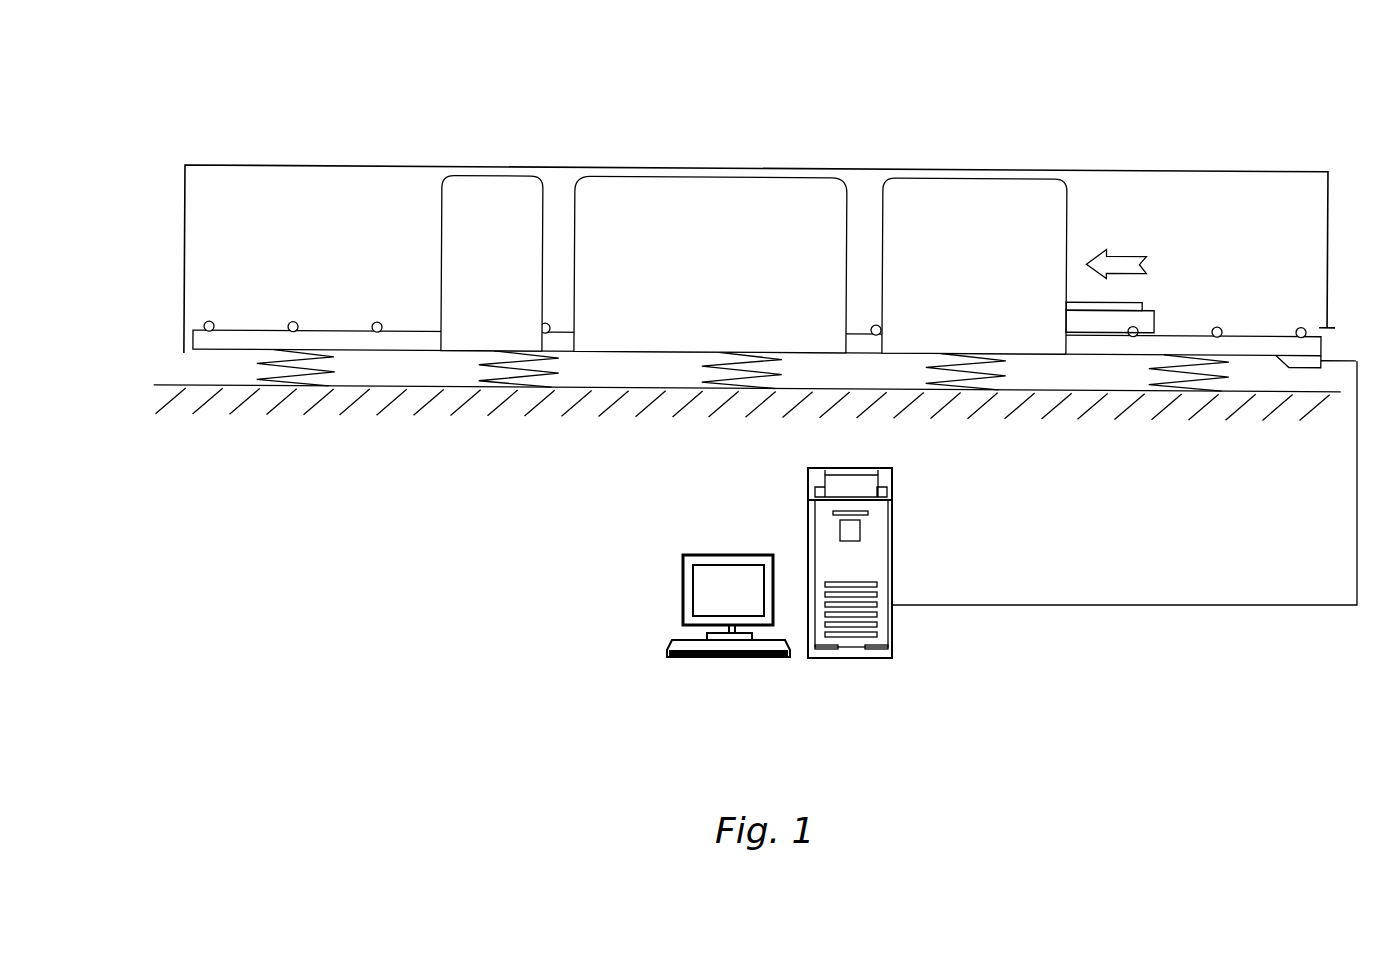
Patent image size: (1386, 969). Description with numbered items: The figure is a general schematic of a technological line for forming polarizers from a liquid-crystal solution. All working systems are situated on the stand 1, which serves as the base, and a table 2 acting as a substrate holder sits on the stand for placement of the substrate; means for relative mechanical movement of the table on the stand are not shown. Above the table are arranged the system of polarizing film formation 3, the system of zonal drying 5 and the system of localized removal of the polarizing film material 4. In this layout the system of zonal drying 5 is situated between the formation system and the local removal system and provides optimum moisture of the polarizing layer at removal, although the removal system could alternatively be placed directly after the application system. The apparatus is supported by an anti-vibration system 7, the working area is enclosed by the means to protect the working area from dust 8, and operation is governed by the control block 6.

The stand 1 is at (322, 344).
The table 2 is at (1144, 319).
The system of polarizing film formation 3 is at (974, 266).
The system of localized removal of the polarizing film material 4 is at (492, 264).
The system of zonal drying 5 is at (710, 264).
The control block 6 is at (800, 563).
The anti-vibration system 7 is at (519, 371).
The means to protect the working area from dust 8 is at (1156, 170).